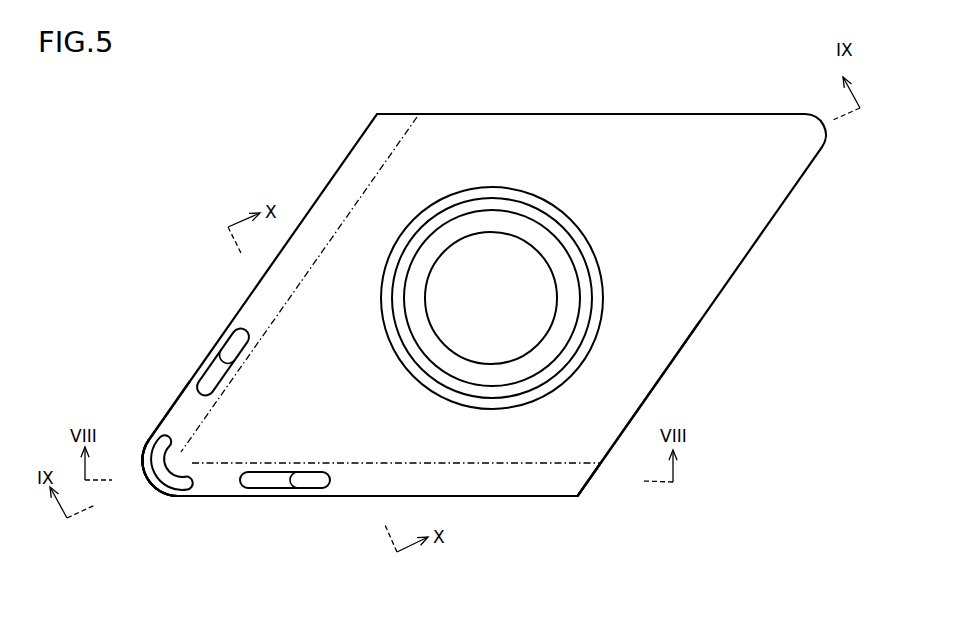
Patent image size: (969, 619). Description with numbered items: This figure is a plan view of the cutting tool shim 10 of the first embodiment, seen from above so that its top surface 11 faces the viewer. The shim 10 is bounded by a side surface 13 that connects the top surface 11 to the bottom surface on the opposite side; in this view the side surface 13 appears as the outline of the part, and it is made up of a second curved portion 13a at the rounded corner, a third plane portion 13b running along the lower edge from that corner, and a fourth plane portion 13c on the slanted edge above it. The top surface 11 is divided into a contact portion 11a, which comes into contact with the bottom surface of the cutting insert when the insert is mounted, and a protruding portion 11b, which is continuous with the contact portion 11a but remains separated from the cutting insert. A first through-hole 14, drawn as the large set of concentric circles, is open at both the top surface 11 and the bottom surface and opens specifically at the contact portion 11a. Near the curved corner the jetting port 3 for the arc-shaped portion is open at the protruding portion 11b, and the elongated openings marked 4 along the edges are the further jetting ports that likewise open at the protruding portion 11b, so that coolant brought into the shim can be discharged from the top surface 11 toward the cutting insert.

The shim 10 is at (758, 97).
The first through-hole 14 is at (528, 247).
The operation button 4 is at (218, 359).
The side surface 13 is at (239, 550).
The second curved portion 13a is at (155, 490).
The third plane portion 13b is at (218, 497).
The fourth plane portion 13c is at (182, 383).
The jetting port for arc-shaped portion 3 is at (197, 480).
The top surface 11 is at (655, 549).
The contact portion 11a is at (593, 425).
The protruding portion 11b is at (547, 480).